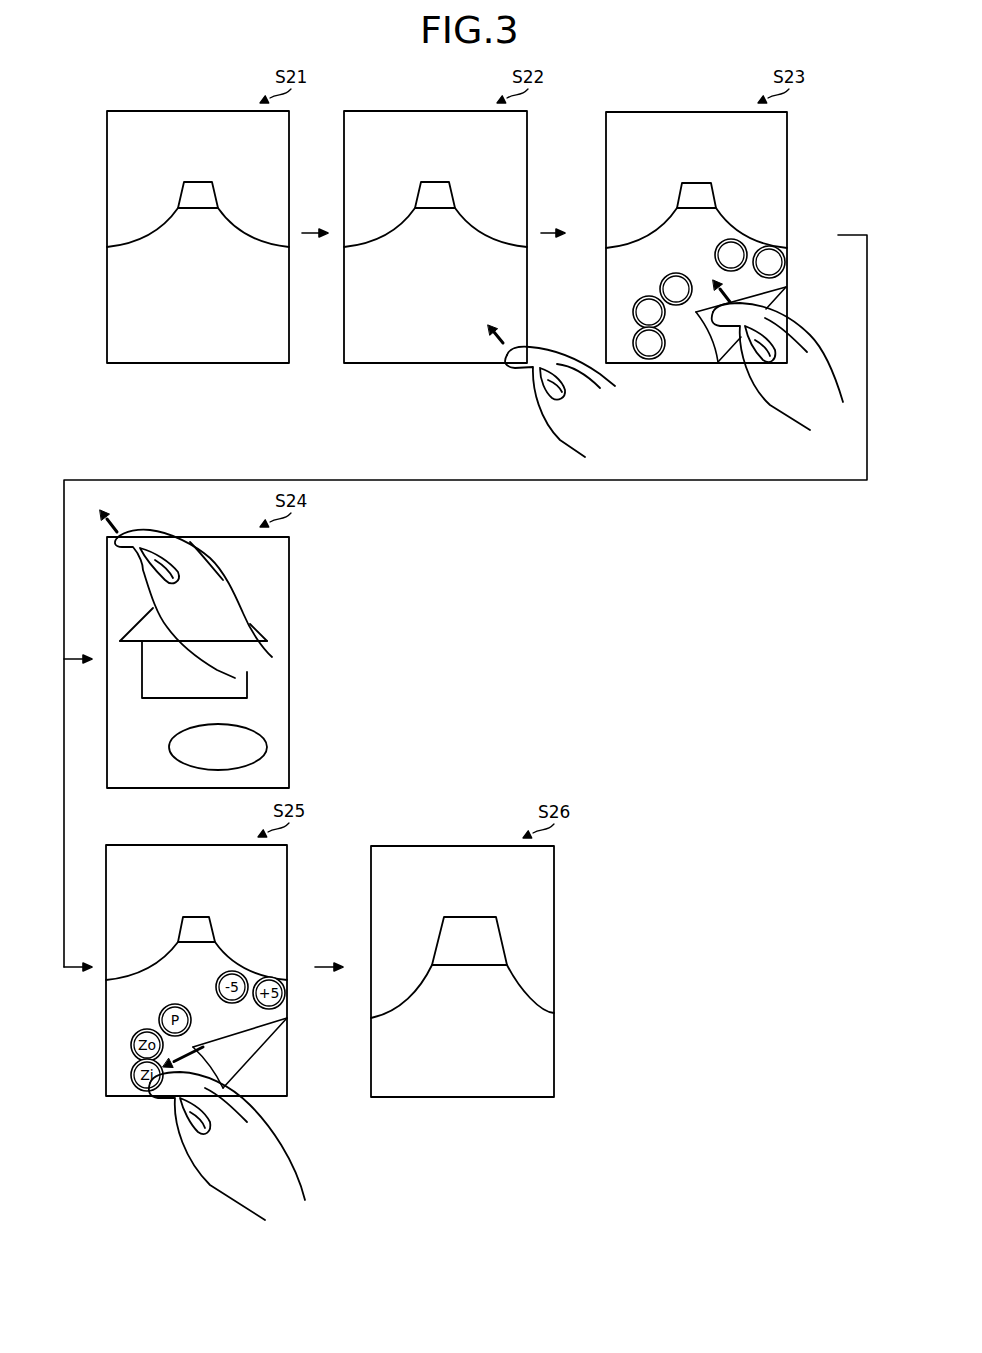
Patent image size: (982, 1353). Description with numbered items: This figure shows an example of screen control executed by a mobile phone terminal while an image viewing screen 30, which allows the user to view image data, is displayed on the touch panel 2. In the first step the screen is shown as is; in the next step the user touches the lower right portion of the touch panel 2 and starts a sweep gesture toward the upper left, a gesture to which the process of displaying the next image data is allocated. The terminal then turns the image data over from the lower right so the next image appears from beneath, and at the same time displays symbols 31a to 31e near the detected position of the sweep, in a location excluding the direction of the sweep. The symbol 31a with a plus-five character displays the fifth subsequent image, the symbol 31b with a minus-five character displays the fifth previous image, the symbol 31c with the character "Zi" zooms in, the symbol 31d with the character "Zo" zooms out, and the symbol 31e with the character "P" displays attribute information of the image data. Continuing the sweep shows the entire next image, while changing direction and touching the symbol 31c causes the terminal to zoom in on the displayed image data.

The touch panel 2 is at (155, 111).
The image viewing screen 30 is at (107, 338).
The symbol 31a is at (771, 276).
The symbol 31b is at (722, 243).
The symbol 31c is at (666, 347).
The symbol 31d is at (666, 314).
The symbol 31e is at (669, 273).